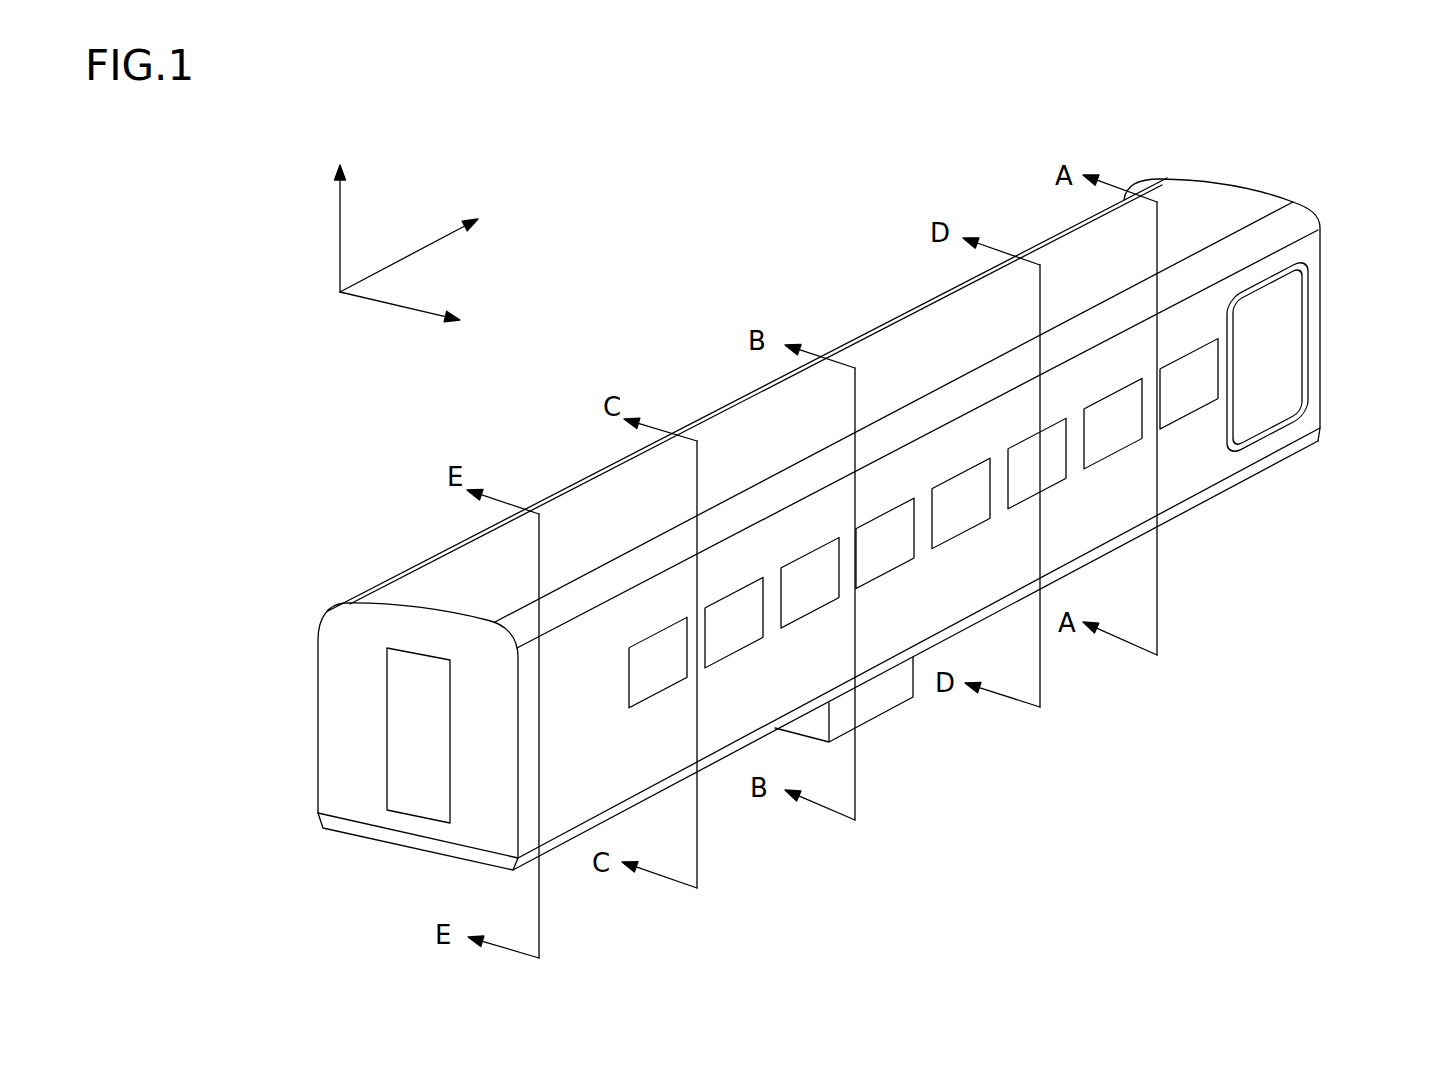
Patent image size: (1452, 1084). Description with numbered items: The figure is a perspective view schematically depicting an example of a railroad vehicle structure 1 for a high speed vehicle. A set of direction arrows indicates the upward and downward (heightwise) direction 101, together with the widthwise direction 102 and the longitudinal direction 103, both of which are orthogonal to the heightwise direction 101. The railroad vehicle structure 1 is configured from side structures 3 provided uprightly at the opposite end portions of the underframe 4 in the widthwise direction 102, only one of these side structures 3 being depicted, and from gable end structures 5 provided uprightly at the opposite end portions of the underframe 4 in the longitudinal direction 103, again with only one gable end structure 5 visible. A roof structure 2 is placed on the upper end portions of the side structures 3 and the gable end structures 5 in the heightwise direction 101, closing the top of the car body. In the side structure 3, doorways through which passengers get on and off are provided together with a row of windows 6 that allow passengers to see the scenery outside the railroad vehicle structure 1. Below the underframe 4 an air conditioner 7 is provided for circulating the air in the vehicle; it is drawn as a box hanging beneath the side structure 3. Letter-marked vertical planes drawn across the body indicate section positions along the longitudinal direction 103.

The railroad vehicle structure 1 is at (793, 243).
The roof structure 2 is at (616, 532).
The side structure 3 is at (1308, 252).
The underframe 4 is at (1236, 480).
The gable end structure 5 is at (361, 701).
The window 6 is at (891, 558).
The air conditioner 7 is at (891, 711).
The upward and downward (heightwise) direction 101 is at (326, 206).
The widthwise direction 102 is at (423, 313).
The longitudinal direction 103 is at (431, 245).